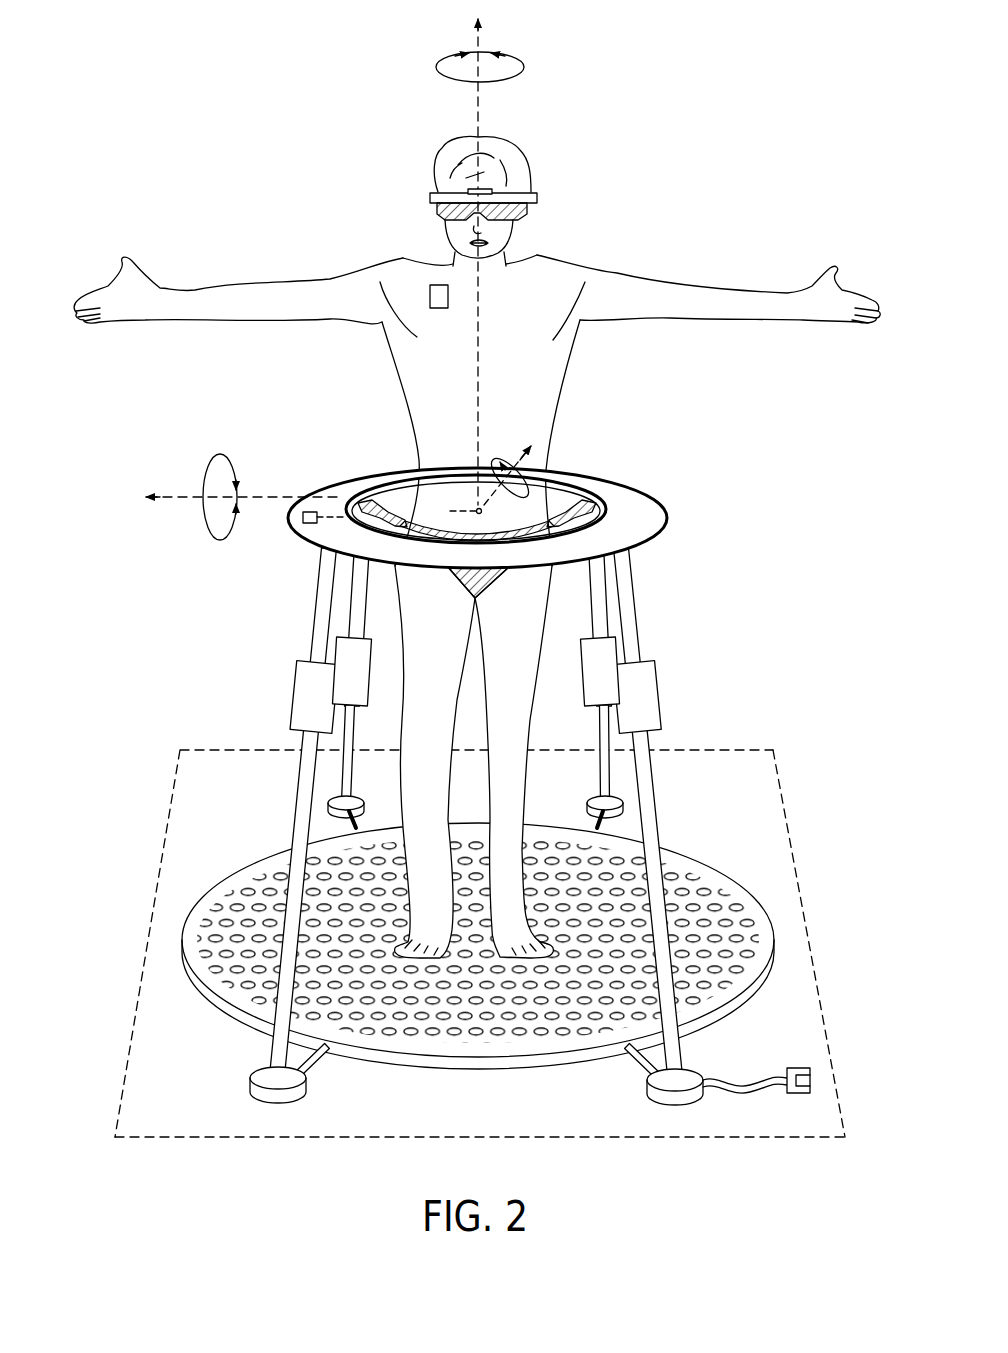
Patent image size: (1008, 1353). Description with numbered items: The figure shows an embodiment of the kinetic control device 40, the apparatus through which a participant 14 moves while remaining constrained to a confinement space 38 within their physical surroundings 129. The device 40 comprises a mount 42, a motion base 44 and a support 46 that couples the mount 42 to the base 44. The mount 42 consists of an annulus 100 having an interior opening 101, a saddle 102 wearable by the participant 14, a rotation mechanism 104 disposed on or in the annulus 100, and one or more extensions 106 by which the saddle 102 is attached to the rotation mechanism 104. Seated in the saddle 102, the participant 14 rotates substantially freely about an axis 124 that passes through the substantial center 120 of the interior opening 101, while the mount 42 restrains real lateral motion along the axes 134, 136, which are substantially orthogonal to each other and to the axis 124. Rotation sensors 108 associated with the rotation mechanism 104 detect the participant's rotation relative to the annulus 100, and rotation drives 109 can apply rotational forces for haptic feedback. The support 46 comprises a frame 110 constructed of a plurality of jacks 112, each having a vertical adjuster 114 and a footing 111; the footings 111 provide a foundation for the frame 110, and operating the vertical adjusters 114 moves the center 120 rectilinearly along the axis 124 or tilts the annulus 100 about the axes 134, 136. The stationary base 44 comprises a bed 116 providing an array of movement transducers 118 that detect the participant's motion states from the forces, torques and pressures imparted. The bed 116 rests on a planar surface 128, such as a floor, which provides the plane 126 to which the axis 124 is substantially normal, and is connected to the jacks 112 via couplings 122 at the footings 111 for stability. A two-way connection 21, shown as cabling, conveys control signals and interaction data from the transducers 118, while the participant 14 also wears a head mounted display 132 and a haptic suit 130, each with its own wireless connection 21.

The participant 14 is at (477, 547).
The two-way connection 21 is at (500, 191).
The confinement space 38 is at (486, 841).
The kinetic control device 40 is at (506, 834).
The mount 42 is at (494, 518).
The motion base 44 is at (494, 958).
The support 46 is at (486, 834).
The annulus 100 is at (628, 490).
The interior opening 101 is at (625, 530).
The saddle 102 is at (430, 520).
The rotation mechanism 104 is at (370, 530).
The extensions 106 is at (375, 486).
The rotation sensors 108 is at (553, 540).
The rotation drives 109 is at (300, 524).
The frame 110 is at (298, 775).
The footings 111 is at (253, 1090).
The jacks 112 is at (355, 725).
The vertical adjusters 114 is at (305, 707).
The bed 116 is at (460, 1063).
The movement transducers 118 is at (478, 958).
The substantial center 120 is at (473, 497).
The couplings 122 is at (356, 824).
The axis 124 is at (481, 107).
The plane 126 is at (511, 943).
The planar surface 128 is at (780, 818).
The physical surroundings 129 is at (845, 965).
The haptic suit 130 is at (563, 268).
The head mounted display 132 is at (540, 200).
The axis 134 is at (172, 490).
The axis 136 is at (520, 462).